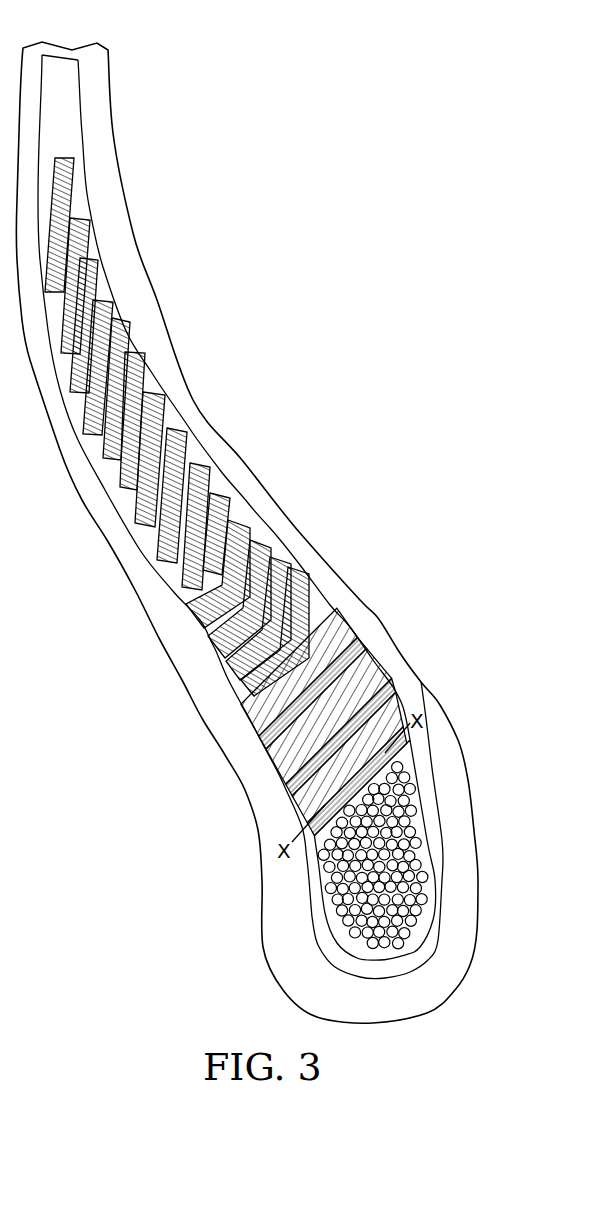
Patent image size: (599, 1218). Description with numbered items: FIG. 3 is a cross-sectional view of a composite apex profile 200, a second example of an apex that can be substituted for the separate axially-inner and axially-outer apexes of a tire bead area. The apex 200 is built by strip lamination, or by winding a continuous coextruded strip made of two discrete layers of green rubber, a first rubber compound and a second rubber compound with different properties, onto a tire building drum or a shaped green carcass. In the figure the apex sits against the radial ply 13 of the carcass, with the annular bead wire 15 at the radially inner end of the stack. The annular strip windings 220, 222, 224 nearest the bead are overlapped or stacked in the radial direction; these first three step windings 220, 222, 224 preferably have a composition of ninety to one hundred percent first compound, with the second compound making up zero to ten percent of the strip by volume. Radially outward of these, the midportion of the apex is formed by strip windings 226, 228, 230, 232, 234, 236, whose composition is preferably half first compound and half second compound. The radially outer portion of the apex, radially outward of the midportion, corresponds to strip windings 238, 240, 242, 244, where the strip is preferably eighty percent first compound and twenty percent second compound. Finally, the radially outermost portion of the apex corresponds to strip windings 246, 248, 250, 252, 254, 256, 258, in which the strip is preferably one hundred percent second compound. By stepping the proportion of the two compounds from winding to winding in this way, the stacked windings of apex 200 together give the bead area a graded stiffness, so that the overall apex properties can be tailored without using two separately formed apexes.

The apex profile 200 is at (140, 96).
The radial ply 13 is at (430, 728).
The annular bead wire 15 is at (427, 913).
The annular strip winding 220 is at (400, 753).
The annular strip winding 222 is at (305, 810).
The annular strip winding 224 is at (373, 690).
The strip winding 226 is at (367, 653).
The strip winding 228 is at (327, 637).
The strip winding 230 is at (297, 582).
The strip winding 232 is at (280, 570).
The strip winding 234 is at (258, 548).
The strip winding 236 is at (200, 625).
The strip winding 238 is at (238, 530).
The strip winding 240 is at (217, 500).
The strip winding 242 is at (197, 472).
The strip winding 244 is at (175, 438).
The strip winding 246 is at (150, 400).
The strip winding 248 is at (132, 362).
The strip winding 250 is at (117, 330).
The strip winding 252 is at (103, 310).
The strip winding 254 is at (88, 268).
The strip winding 256 is at (75, 228).
The strip winding 258 is at (63, 178).